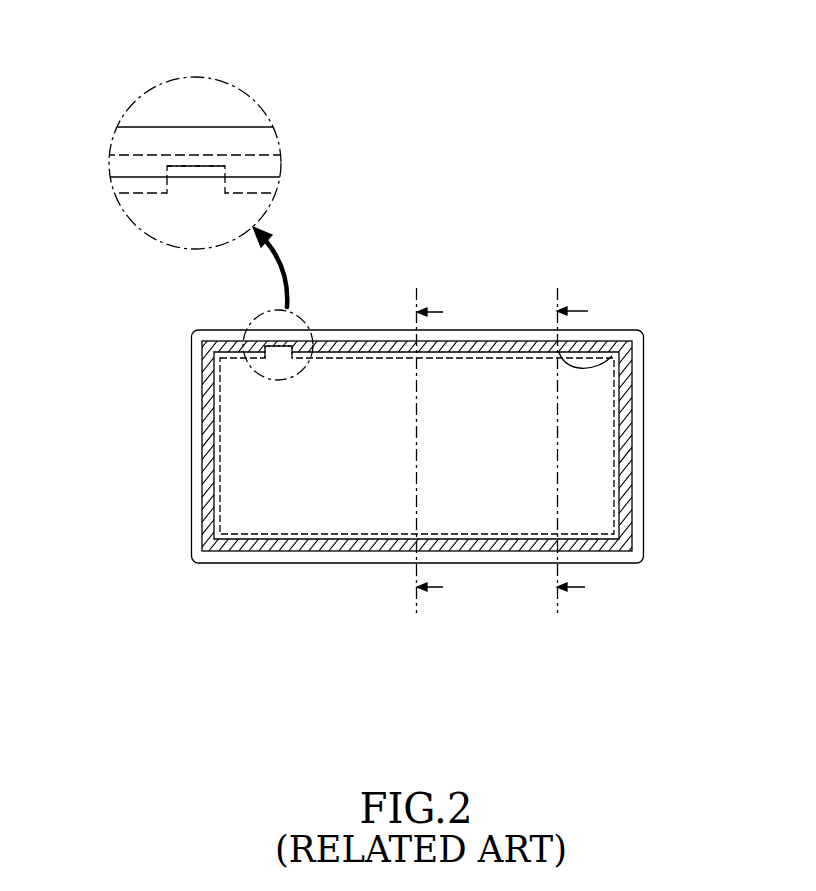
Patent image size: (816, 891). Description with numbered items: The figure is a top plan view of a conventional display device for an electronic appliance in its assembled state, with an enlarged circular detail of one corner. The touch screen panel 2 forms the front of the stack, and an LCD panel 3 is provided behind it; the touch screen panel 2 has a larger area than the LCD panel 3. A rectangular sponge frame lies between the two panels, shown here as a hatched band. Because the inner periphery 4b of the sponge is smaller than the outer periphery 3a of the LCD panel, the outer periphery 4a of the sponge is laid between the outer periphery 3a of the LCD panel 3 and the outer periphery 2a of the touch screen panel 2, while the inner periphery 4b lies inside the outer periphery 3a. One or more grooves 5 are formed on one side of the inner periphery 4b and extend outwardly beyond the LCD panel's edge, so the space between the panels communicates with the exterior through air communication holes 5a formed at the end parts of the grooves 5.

The touch screen panel 2 is at (192, 134).
The outer periphery of the touch screen panel 2a is at (228, 127).
The LCD panel 3 is at (260, 205).
The outer periphery of the LCD panel 3a is at (263, 177).
The outer periphery of the sponge 4a is at (128, 155).
The inner periphery of the sponge 4b is at (137, 195).
The groove 5 is at (182, 183).
The air communication hole 5a is at (197, 172).